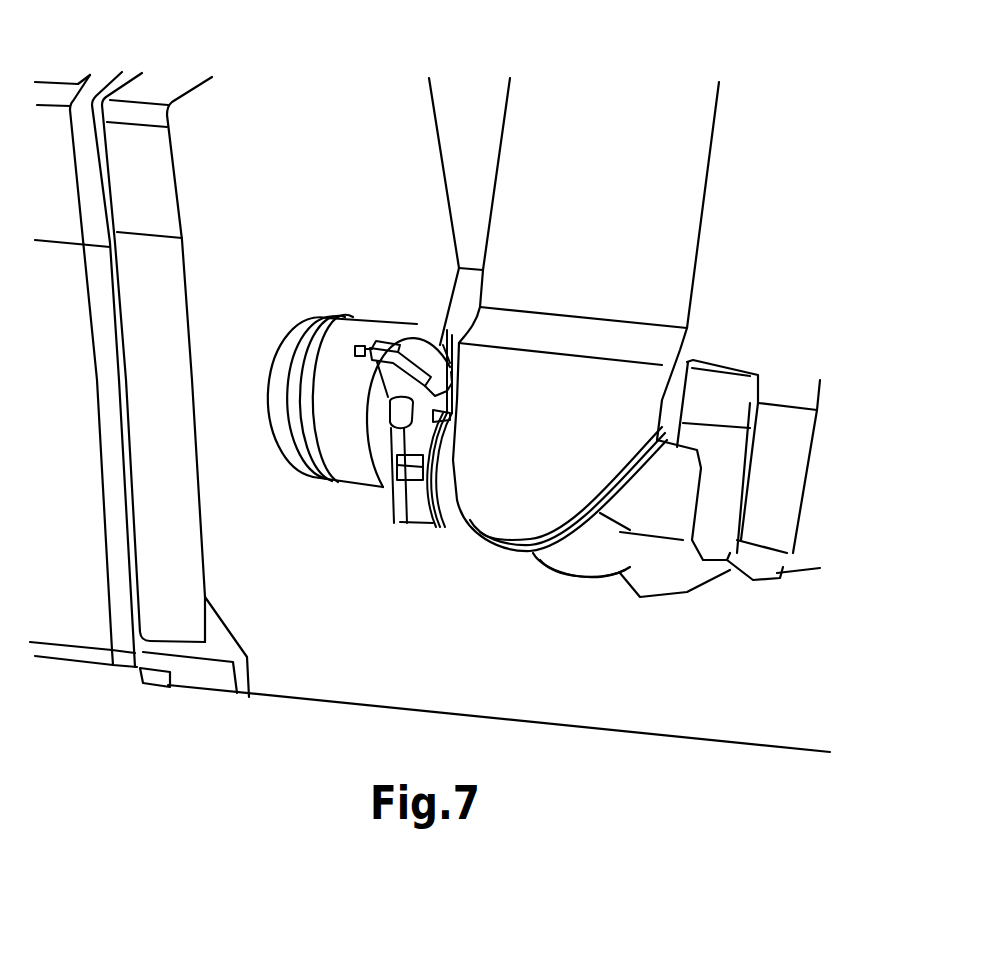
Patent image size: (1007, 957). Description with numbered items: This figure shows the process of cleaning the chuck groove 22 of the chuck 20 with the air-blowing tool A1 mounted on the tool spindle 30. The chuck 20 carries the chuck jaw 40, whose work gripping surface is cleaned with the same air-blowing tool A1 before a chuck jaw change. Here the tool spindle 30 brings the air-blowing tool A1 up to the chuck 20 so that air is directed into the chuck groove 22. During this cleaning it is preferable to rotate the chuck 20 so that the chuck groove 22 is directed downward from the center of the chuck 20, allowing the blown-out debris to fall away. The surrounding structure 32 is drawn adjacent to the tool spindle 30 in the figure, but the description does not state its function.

The chuck 20 is at (357, 333).
The chuck groove 22 is at (390, 487).
The tool spindle 30 is at (440, 523).
The support block 32 is at (598, 380).
The chuck jaw 40 is at (413, 332).
The air-blowing tool A1 is at (400, 490).